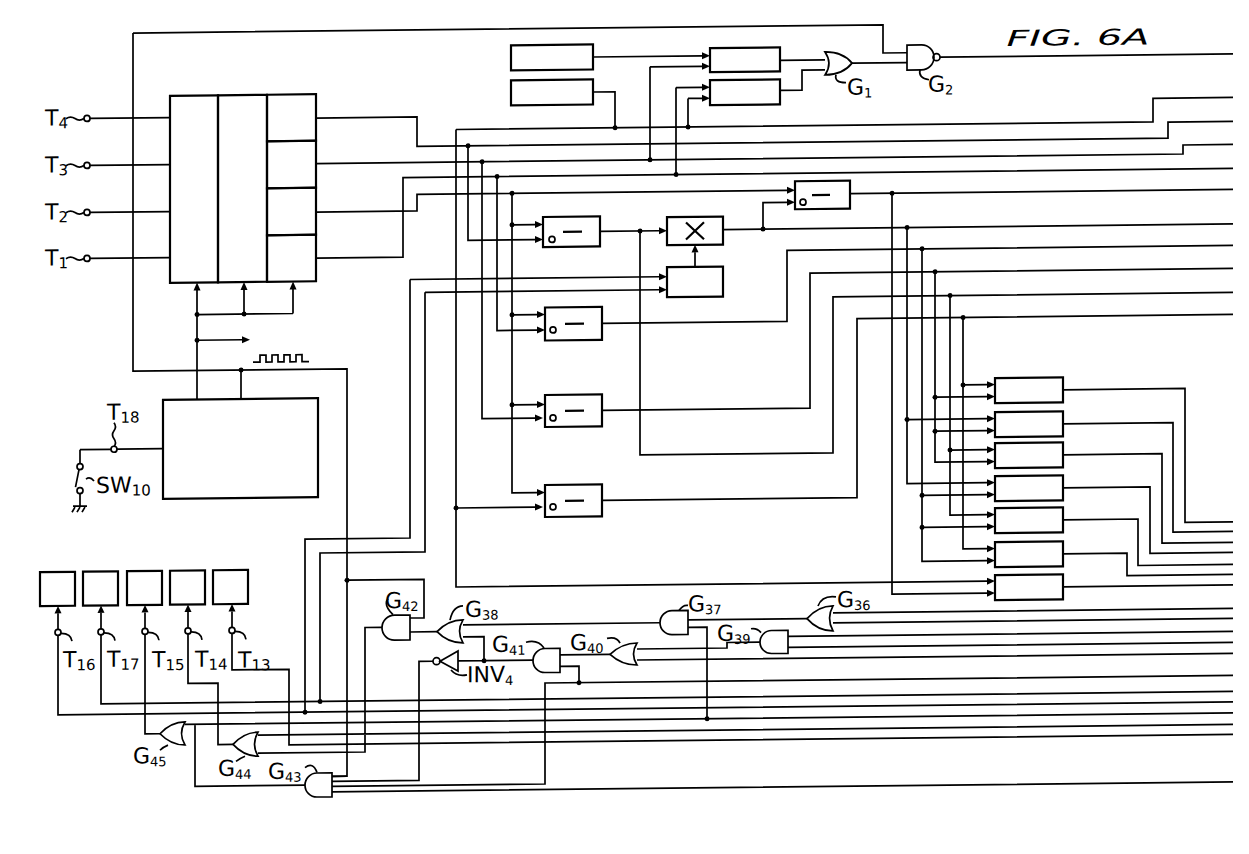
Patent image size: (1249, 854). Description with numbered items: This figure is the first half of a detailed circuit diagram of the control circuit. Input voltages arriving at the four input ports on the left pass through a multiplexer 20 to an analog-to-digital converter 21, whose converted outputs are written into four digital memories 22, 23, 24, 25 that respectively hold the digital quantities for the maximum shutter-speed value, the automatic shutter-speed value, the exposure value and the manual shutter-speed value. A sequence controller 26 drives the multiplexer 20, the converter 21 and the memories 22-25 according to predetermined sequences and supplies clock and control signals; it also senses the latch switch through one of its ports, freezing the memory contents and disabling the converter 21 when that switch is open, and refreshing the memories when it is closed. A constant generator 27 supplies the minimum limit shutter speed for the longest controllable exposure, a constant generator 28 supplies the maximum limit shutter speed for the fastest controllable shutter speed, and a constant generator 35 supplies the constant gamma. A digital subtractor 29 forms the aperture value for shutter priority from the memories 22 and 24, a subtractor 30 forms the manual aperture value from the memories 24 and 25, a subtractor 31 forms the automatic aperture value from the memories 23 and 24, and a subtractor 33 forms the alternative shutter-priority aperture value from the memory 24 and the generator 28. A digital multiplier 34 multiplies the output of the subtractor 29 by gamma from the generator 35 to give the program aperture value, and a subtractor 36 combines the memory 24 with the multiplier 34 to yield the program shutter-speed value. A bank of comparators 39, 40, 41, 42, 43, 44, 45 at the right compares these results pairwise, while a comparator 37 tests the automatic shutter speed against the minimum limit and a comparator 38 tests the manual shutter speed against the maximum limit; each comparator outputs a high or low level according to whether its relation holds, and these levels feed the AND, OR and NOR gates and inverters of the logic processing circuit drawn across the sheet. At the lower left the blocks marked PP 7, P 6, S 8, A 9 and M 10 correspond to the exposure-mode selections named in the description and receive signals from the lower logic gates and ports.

The P indicator lamp 6 is at (102, 570).
The PP indicator lamp 7 is at (59, 570).
The S indicator lamp 8 is at (146, 570).
The A indicator lamp 9 is at (189, 570).
The M indicator lamp 10 is at (233, 571).
The multiplexer 20 is at (194, 97).
The analog-to-digital converter 21 is at (242, 97).
The digital memory 22 is at (291, 117).
The digital memory 23 is at (291, 165).
The digital memory 24 is at (291, 212).
The digital memory 25 is at (291, 258).
The sequence controller 26 is at (286, 505).
The constant generator 27 is at (511, 63).
The constant generator 28 is at (511, 99).
The digital subtractor 29 is at (588, 224).
The subtractor 30 is at (592, 315).
The subtractor 31 is at (592, 402).
The subtractor 33 is at (592, 492).
The digital multiplier 34 is at (714, 225).
The constant generator 35 is at (715, 275).
The subtractor 36 is at (840, 218).
The comparator 37 is at (763, 56).
The comparator 38 is at (772, 113).
The comparator 39 is at (1060, 399).
The comparator 40 is at (1060, 432).
The comparator 41 is at (1060, 464).
The comparator 42 is at (1060, 497).
The comparator 43 is at (1060, 529).
The comparator 44 is at (1060, 562).
The comparator 45 is at (1060, 596).